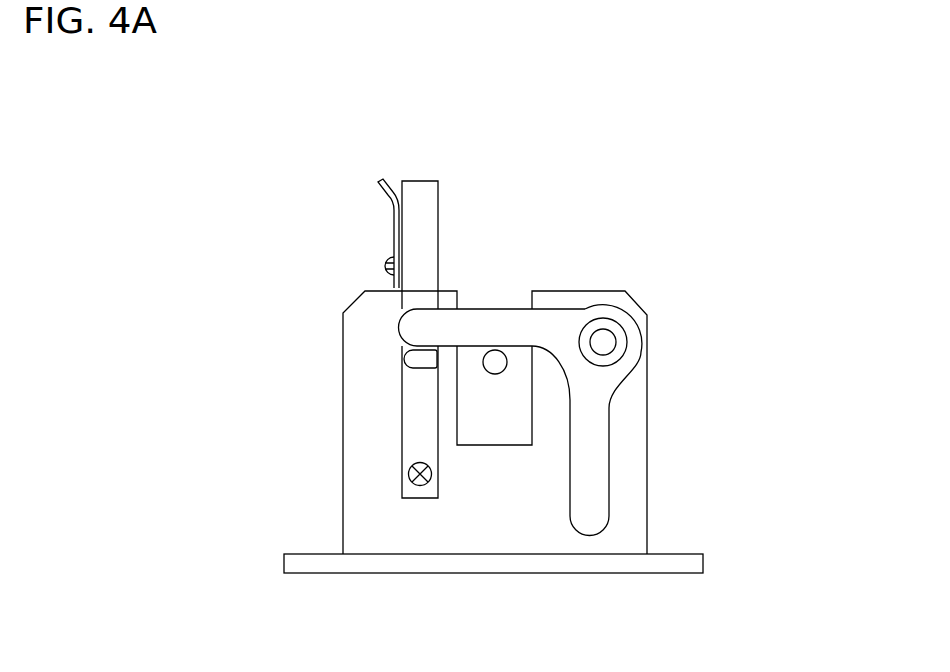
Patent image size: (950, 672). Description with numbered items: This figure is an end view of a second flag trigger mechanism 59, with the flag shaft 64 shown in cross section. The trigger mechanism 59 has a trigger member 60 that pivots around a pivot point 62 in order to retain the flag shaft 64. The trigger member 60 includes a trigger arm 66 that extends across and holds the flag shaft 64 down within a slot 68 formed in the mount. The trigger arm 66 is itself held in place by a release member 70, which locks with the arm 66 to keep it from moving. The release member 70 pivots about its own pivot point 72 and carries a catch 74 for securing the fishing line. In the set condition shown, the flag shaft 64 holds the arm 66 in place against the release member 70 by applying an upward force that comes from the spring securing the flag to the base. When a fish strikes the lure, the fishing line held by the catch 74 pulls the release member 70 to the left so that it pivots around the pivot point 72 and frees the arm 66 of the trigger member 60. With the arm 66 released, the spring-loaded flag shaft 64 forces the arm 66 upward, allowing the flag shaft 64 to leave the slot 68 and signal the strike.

The trigger mechanism 59 is at (717, 343).
The trigger member 60 is at (597, 470).
The pivot point 62 is at (602, 342).
The flag shaft 64 is at (497, 362).
The trigger arm 66 is at (475, 325).
The slot 68 is at (503, 427).
The release member 70 is at (425, 240).
The pivot point 72 is at (409, 474).
The catch 74 is at (380, 194).